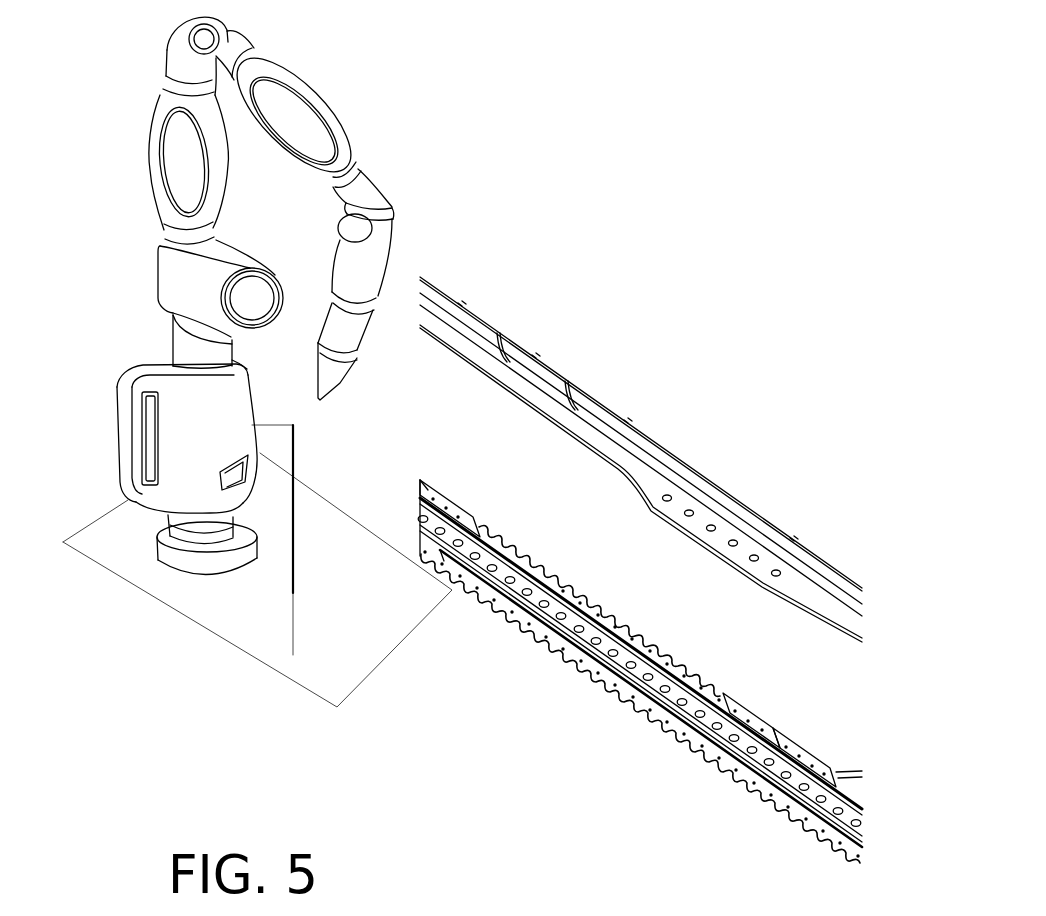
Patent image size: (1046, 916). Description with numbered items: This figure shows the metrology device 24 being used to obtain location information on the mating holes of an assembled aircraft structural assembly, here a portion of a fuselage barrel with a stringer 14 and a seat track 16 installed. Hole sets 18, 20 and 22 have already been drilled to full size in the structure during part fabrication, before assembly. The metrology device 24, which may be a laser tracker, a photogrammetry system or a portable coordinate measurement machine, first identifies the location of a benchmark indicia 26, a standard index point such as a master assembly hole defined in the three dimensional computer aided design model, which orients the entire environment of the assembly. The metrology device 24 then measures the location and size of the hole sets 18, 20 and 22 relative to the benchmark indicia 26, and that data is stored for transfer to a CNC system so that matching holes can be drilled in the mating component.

The stringer 14 is at (603, 410).
The seat track 16 is at (578, 663).
The hole set 18 is at (448, 497).
The hole set 20 is at (753, 708).
The hole set 22 is at (717, 527).
The metrology device 24 is at (148, 171).
The benchmark indicia 26 is at (781, 740).